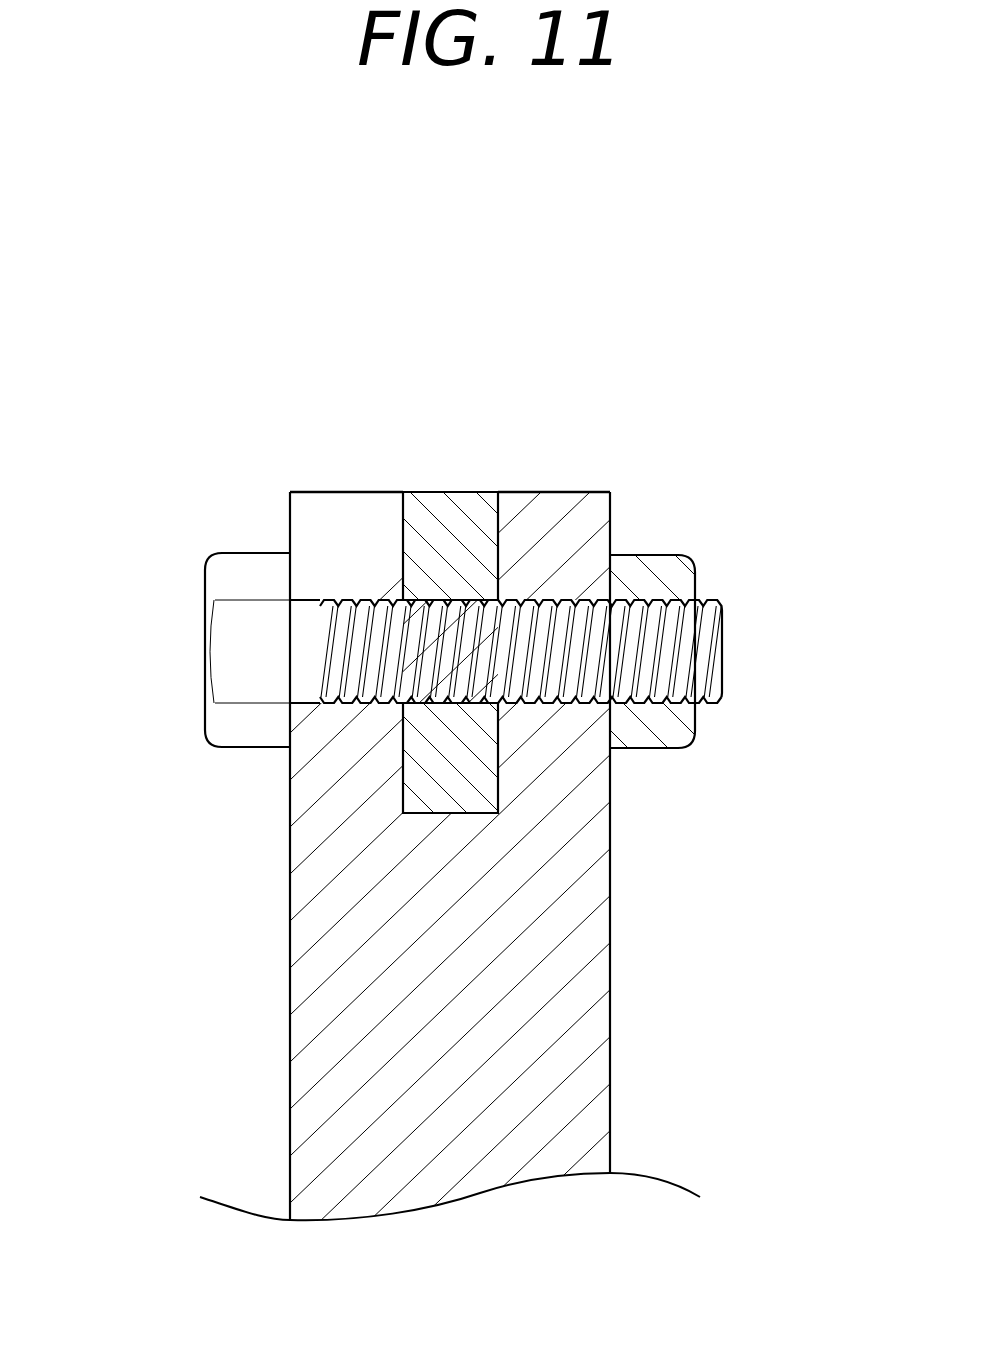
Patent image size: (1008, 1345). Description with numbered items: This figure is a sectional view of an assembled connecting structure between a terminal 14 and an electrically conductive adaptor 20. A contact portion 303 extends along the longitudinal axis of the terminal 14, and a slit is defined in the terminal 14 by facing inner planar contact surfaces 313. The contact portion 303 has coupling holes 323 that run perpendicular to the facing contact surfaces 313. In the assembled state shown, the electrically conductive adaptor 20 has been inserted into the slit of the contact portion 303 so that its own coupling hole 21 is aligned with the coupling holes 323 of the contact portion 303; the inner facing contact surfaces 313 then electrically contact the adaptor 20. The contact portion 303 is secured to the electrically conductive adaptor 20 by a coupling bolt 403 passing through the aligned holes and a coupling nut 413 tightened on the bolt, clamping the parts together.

The terminal 14 is at (555, 998).
The electrically conductive adaptor 20 is at (437, 527).
The coupling hole 21 is at (443, 597).
The contact portion 303 is at (337, 493).
The inner planar contact surfaces 313 is at (402, 555).
The coupling holes 323 is at (340, 700).
The coupling bolt 403 is at (248, 632).
The coupling nut 413 is at (657, 583).